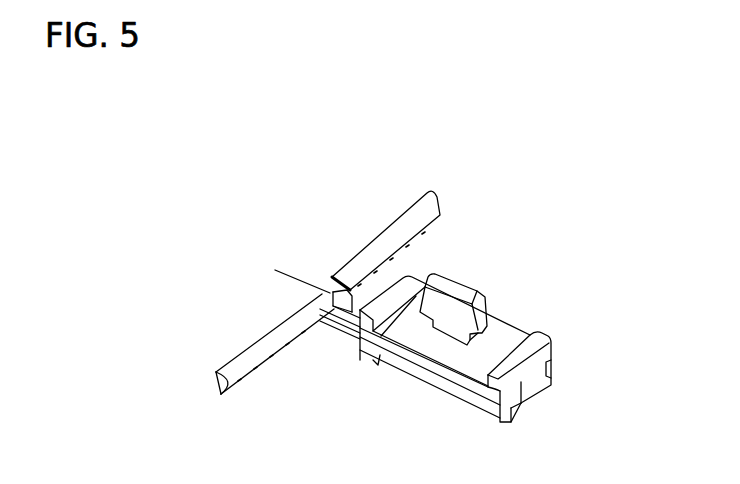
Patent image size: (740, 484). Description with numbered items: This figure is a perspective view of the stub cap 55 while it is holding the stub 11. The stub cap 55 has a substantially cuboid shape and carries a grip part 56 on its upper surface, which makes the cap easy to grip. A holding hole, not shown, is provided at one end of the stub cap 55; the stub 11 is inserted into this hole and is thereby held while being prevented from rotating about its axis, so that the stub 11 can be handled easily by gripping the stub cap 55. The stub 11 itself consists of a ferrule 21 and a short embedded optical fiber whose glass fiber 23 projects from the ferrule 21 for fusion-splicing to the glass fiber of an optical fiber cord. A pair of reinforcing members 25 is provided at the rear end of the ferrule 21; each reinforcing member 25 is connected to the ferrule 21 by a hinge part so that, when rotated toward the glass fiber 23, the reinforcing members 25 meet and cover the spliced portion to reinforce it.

The stub 11 is at (336, 333).
The ferrule 21 is at (345, 335).
The glass fiber 23 is at (297, 272).
The reinforcing member 25 is at (255, 345).
The stub cap 55 is at (513, 318).
The grip part 56 is at (466, 284).